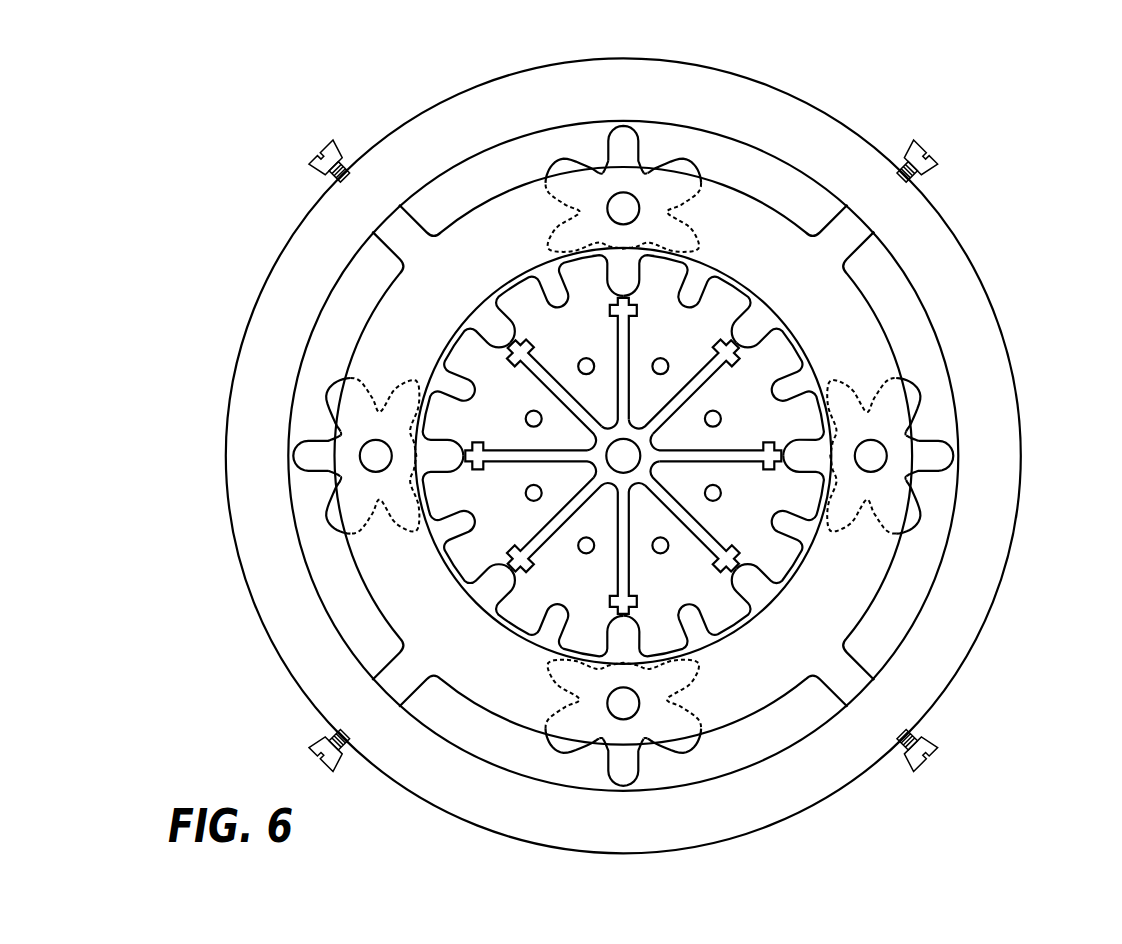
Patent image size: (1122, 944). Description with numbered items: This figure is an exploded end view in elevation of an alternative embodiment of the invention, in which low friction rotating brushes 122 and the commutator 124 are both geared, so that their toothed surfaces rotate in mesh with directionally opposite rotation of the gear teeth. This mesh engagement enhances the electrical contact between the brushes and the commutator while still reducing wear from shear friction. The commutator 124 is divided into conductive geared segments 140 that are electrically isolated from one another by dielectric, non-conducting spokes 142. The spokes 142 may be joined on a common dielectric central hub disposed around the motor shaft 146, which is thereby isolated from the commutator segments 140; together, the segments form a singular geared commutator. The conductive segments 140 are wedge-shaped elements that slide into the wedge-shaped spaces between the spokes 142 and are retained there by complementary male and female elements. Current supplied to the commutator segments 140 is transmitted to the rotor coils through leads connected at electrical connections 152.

The rotating brushes 122 is at (606, 145).
The commutator 124 is at (544, 625).
The conductive geared segments 140 is at (512, 301).
The dielectric spokes 142 is at (725, 458).
The motor shaft 146 is at (623, 459).
The electrical connections 152 is at (713, 416).